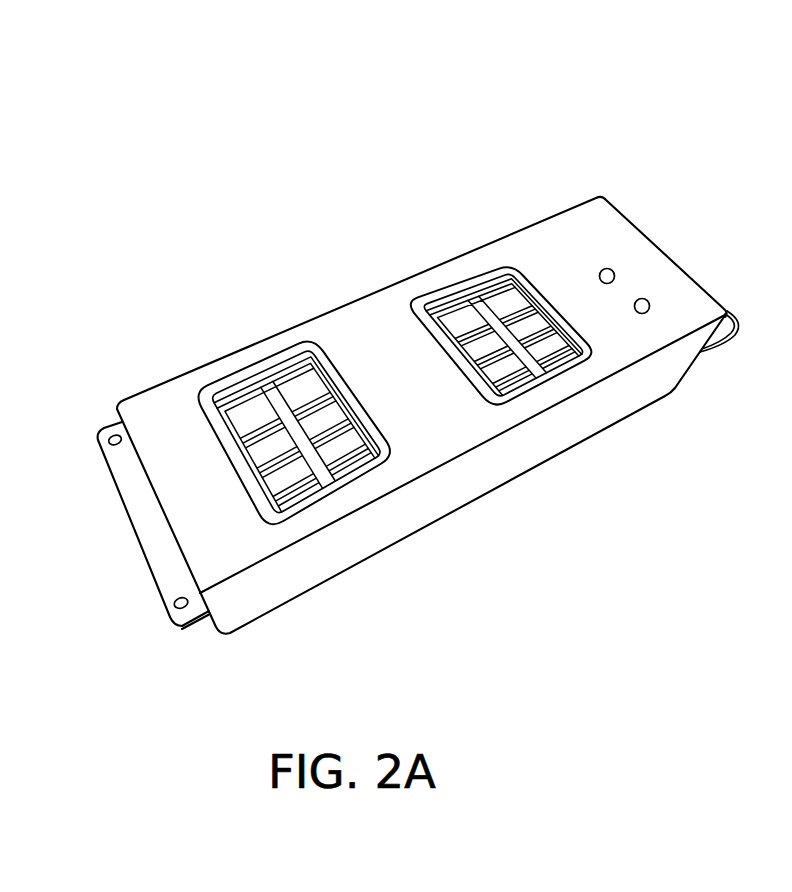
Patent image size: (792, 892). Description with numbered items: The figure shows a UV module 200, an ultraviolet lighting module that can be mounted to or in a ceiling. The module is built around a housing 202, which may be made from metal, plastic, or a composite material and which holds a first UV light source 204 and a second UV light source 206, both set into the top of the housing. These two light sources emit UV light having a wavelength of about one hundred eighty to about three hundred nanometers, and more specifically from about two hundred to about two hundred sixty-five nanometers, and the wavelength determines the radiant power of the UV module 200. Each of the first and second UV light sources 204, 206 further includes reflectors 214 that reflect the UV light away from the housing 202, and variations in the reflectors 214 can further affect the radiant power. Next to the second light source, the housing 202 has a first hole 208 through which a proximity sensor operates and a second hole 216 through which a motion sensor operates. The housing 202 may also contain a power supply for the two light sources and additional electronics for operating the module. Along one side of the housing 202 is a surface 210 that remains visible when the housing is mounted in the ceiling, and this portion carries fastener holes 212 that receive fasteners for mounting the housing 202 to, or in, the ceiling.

The UV module 200 is at (311, 184).
The housing 202 is at (590, 213).
The first UV light source 204 is at (317, 413).
The second UV light source 206 is at (520, 323).
The first hole 208 is at (607, 268).
The surface 210 is at (208, 577).
The fastener holes 212 is at (124, 446).
The reflectors 214 is at (237, 382).
The second hole 216 is at (642, 299).